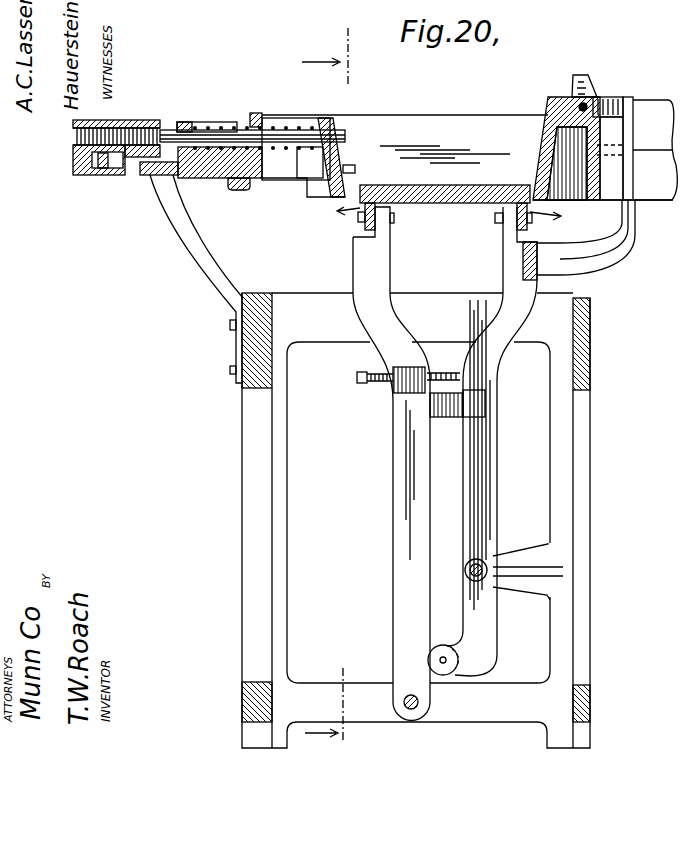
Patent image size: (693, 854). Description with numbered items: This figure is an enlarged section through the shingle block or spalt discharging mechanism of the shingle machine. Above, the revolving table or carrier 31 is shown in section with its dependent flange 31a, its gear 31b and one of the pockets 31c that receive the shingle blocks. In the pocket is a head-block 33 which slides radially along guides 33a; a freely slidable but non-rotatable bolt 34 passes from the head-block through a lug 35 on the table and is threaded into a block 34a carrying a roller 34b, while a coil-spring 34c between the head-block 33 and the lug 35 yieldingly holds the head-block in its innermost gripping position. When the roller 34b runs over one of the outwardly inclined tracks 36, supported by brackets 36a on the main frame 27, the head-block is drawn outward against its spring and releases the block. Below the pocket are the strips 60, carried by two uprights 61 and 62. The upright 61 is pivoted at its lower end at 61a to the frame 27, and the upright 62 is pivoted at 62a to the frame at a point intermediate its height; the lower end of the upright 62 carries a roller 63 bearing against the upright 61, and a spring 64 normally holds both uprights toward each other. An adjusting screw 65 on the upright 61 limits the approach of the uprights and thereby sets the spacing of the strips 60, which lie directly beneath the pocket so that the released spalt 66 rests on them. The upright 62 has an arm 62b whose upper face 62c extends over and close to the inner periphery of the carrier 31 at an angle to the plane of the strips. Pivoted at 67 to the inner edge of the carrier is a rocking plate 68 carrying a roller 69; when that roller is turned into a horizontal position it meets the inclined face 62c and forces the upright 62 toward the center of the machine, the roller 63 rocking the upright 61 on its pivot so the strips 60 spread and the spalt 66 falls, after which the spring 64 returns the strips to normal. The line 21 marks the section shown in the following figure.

The section line 21 is at (323, 391).
The main frame 27 is at (242, 437).
The table or carrier 31 is at (256, 113).
The dependent flange 31a is at (242, 191).
The gear 31b is at (200, 178).
The pockets 31c is at (438, 125).
The head-block 33 is at (338, 150).
The guides 33a is at (355, 168).
The bolt 34 is at (172, 127).
The block 34a is at (137, 126).
The roller 34b is at (105, 168).
The coil-spring 34c is at (205, 122).
The lug 35 is at (213, 130).
The tracks 36 is at (150, 175).
The brackets 36a is at (185, 268).
The strips 60 is at (358, 232).
The upright 61 is at (394, 472).
The pivot 61a is at (410, 712).
The upright 62 is at (487, 472).
The pivot 62a is at (482, 582).
The arm 62b is at (605, 232).
The upper face 62c is at (612, 97).
The roller 63 is at (440, 676).
The spring 64 is at (445, 418).
The adjusting screw 65 is at (372, 383).
The spalt 66 is at (464, 178).
The pivot 67 is at (579, 104).
The rocking plate 68 is at (580, 75).
The roller 69 is at (623, 108).